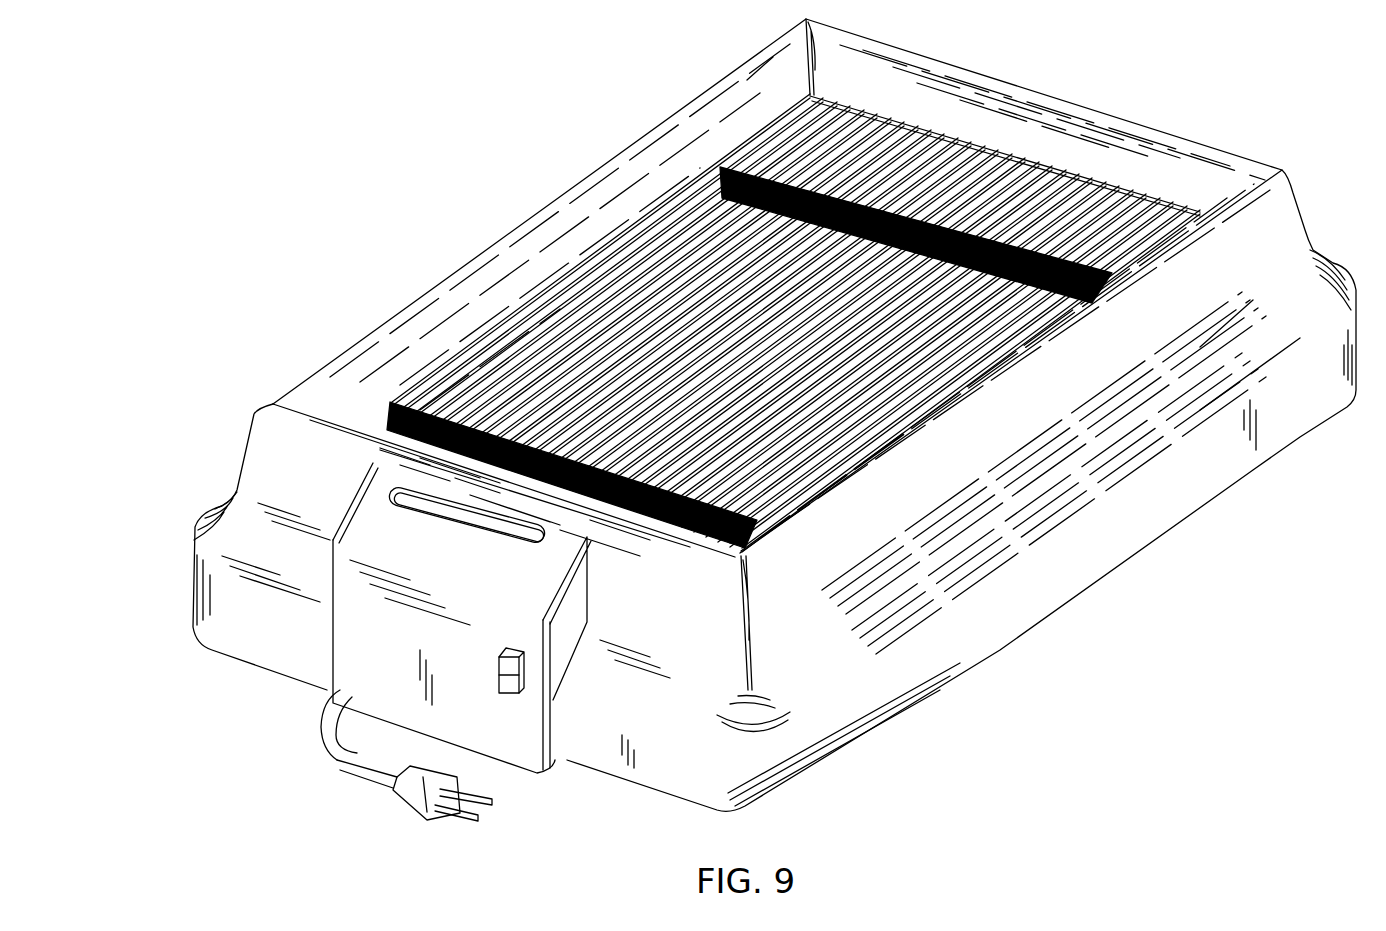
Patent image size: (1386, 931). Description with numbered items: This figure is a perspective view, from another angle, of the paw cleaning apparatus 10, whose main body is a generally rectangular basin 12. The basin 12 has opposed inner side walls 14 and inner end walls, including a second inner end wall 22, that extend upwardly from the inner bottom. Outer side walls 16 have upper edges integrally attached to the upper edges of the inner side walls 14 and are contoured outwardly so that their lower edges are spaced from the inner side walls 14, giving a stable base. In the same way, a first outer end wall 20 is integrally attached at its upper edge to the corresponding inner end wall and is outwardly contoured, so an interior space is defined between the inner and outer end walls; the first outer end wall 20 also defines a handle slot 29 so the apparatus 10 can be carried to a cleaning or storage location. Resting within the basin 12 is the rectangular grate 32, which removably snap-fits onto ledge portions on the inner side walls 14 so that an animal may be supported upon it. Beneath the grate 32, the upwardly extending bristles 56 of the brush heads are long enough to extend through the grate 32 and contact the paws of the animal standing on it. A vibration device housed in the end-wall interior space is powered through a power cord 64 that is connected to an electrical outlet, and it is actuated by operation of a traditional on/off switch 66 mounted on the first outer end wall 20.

The paw cleaning apparatus 10 is at (435, 137).
The basin 12 is at (226, 426).
The inner side walls 14 is at (790, 103).
The outer side walls 16 is at (931, 678).
The first outer end wall 20 is at (691, 767).
The second inner end wall 22 is at (1182, 186).
The handle slot 29 is at (408, 512).
The grate 32 is at (600, 275).
The bristles 56 is at (737, 163).
The power cord 64 is at (367, 773).
The on/off switch 66 is at (499, 657).